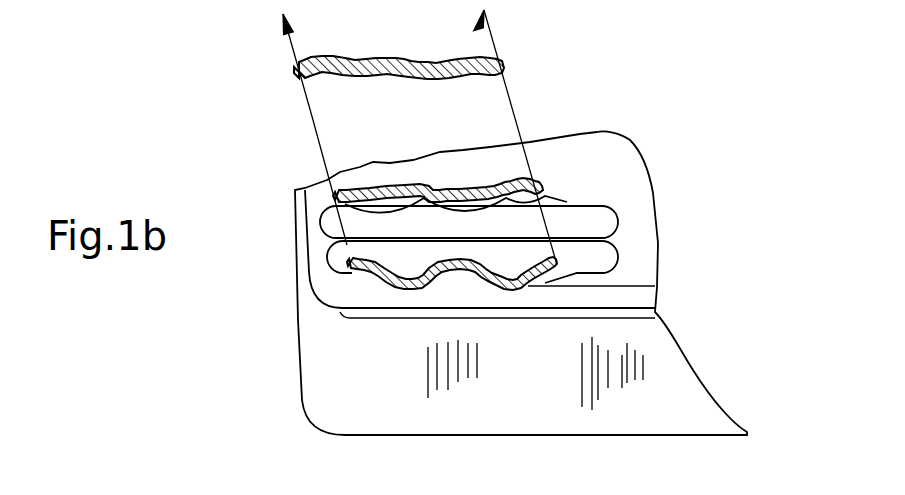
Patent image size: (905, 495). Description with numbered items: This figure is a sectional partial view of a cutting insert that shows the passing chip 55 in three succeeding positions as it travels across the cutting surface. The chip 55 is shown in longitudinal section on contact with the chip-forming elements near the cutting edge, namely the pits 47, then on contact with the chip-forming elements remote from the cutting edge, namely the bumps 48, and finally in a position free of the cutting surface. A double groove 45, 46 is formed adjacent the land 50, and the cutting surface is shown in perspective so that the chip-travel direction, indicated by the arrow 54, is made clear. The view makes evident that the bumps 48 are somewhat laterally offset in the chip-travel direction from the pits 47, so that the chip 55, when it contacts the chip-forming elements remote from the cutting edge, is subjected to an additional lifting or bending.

The arrow 54 is at (292, 50).
The flexible sealing strip 55 is at (428, 82).
The bumps 48 is at (545, 193).
The double groove 46 is at (625, 218).
The double groove 45 is at (602, 254).
The pits 47 is at (537, 285).
The land 50 is at (657, 313).